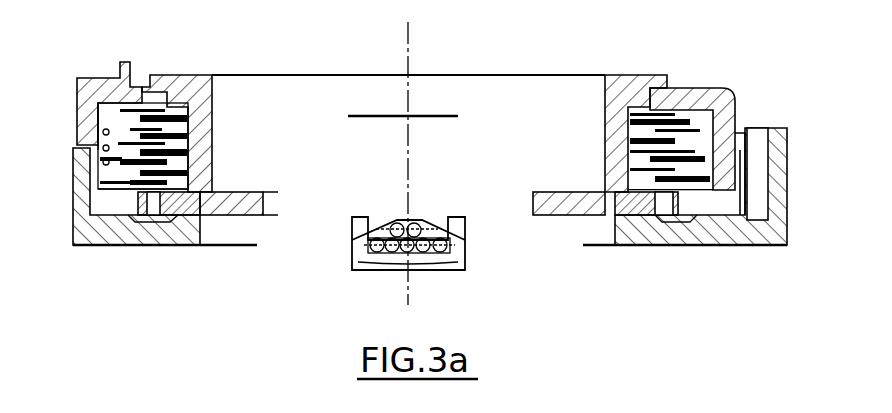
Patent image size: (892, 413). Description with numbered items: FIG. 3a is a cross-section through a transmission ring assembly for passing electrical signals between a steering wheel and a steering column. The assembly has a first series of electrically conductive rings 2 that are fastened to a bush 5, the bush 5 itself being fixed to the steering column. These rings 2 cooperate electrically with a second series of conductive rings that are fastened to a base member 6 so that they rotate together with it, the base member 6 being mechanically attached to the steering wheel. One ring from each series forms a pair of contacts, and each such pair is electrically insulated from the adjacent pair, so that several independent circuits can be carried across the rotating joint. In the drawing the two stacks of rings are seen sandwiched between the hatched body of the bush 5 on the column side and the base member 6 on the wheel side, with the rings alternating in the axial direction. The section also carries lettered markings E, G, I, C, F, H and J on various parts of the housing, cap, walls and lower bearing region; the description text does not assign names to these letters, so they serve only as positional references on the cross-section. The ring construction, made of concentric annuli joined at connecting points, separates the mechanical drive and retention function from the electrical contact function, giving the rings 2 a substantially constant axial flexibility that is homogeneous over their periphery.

The rings of the first series 2 is at (196, 124).
The bush 5 is at (625, 90).
The base member 6 is at (100, 78).
The contact carrier E is at (92, 110).
The contact element G is at (113, 162).
The base housing I is at (120, 192).
The cap C is at (703, 115).
The wall F is at (705, 136).
The block H is at (730, 134).
The bearing assembly J is at (712, 190).